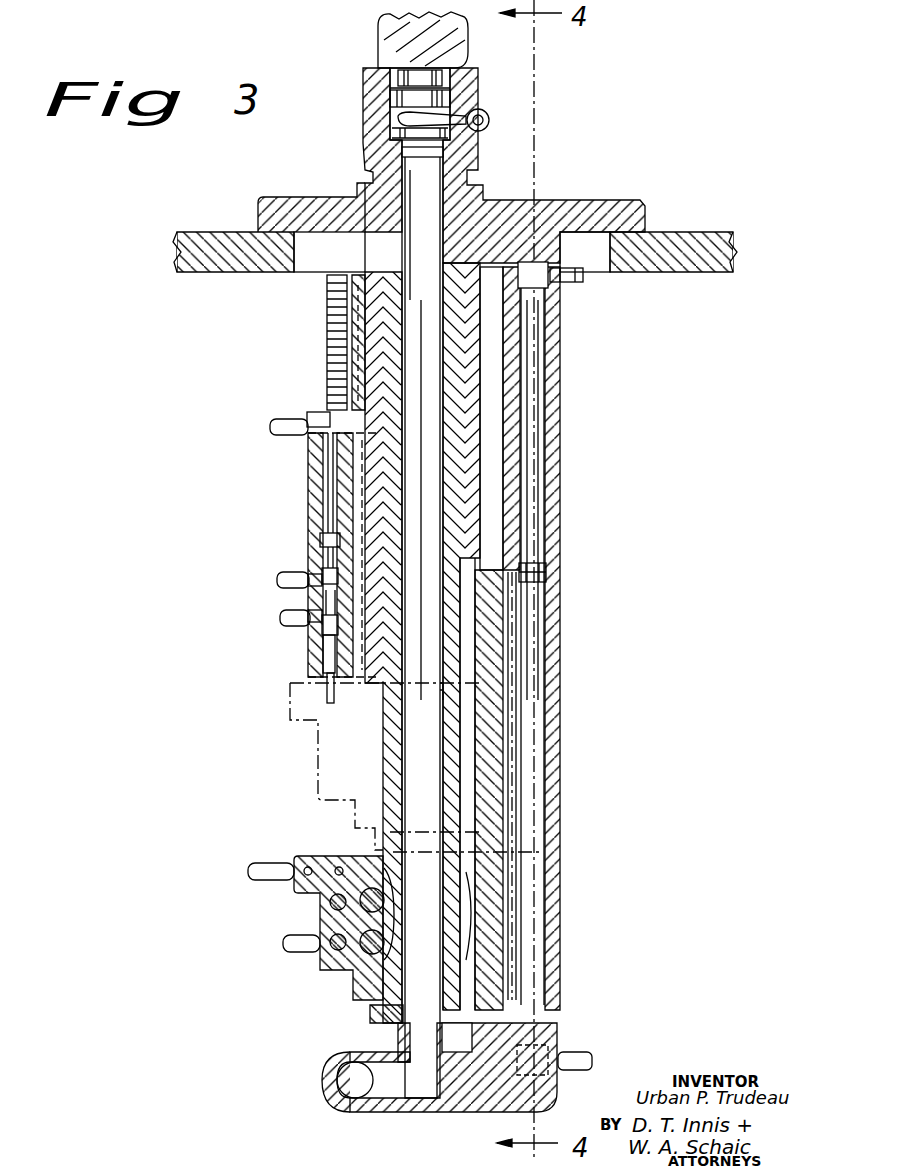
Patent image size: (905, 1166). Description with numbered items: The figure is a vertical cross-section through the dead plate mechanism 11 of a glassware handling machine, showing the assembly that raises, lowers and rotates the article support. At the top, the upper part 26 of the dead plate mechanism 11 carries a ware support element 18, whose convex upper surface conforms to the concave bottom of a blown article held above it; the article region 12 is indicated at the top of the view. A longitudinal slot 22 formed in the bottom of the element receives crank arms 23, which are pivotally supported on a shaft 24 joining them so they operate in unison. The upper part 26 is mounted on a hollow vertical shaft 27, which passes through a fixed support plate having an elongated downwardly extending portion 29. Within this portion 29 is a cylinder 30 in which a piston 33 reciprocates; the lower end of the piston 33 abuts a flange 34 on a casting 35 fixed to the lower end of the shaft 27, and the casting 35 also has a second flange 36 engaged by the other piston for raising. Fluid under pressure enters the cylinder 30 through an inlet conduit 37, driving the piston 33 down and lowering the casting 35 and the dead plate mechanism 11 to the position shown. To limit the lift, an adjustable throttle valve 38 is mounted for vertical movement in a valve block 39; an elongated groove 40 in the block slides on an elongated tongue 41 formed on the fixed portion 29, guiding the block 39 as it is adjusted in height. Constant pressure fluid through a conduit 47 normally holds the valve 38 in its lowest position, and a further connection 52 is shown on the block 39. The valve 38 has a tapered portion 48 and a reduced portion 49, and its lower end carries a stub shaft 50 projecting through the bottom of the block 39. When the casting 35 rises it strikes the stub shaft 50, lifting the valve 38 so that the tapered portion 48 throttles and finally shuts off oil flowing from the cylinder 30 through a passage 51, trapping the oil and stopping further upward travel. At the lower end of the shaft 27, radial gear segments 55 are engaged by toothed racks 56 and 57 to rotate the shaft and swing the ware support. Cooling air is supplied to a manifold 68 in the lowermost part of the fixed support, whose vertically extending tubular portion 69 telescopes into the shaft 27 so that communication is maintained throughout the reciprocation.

The dead plate mechanism 11 is at (358, 87).
The workpiece 12 is at (378, 62).
The ware support element 18 is at (455, 82).
The longitudinal slot 22 is at (400, 118).
The crank arms 23 is at (470, 130).
The shaft 24 is at (489, 119).
The upper part 26 is at (470, 92).
The hollow vertical shaft 27 is at (449, 266).
The downwardly extending portion 29 is at (553, 401).
The cylinder 30 is at (541, 352).
The piston 33 is at (532, 762).
The flange 34 is at (527, 1013).
The casting 35 is at (480, 917).
The second flange 36 is at (541, 574).
The inlet conduit 37 is at (567, 281).
The adjustable throttle valve 38 is at (332, 655).
The valve block 39 is at (320, 513).
The elongated groove 40 is at (345, 703).
The elongated tongue 41 is at (360, 316).
The conduit 47 is at (292, 420).
The tapered portion 48 is at (300, 621).
The reduced portion 49 is at (330, 600).
The stub shaft 50 is at (330, 688).
The passage 51 is at (330, 628).
The pipe 52 is at (290, 573).
The radial gear segments 55 is at (380, 870).
The rack 56 is at (363, 900).
The rack 57 is at (368, 945).
The manifold 68 is at (332, 1074).
The tubular portion 69 is at (440, 688).